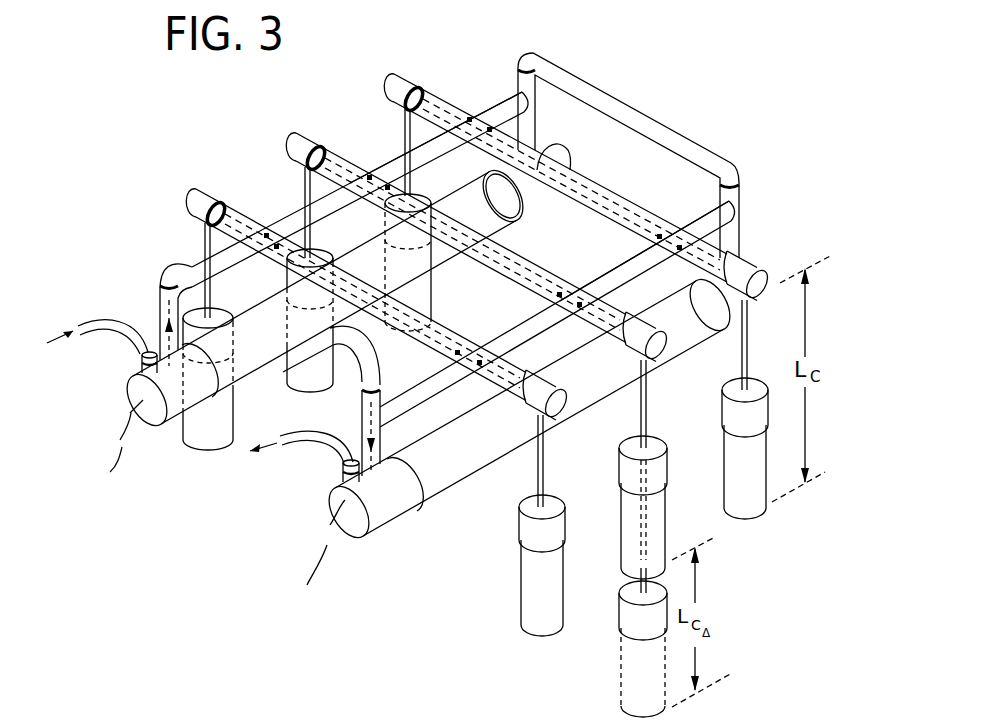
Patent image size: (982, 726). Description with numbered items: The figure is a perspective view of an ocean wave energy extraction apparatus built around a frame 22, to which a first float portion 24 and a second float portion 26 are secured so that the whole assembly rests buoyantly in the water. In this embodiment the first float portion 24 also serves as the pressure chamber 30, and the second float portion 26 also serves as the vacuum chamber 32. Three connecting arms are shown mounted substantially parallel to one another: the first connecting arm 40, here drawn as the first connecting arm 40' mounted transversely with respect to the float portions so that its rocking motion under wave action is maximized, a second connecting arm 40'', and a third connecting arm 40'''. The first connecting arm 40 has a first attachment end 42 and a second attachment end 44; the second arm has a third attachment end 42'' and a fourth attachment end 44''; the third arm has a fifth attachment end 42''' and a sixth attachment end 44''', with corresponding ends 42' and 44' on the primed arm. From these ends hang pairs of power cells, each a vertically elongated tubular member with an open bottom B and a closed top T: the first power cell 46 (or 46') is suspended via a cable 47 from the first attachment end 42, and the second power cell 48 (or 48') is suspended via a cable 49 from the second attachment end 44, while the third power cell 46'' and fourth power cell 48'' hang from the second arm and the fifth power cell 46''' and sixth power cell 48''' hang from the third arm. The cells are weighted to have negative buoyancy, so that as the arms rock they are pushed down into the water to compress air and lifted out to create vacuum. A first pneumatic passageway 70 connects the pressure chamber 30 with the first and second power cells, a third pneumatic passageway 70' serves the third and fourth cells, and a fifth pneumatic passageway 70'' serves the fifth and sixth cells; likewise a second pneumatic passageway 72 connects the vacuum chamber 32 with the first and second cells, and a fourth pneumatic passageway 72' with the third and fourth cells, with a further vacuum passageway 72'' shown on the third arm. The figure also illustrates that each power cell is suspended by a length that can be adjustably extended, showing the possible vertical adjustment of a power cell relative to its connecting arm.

The frame 22 is at (630, 103).
The first float portion 24 is at (330, 500).
The second float portion 26 is at (130, 392).
The pressure chamber 30 is at (320, 540).
The vacuum chamber 32 is at (128, 440).
The first connecting arm 40 is at (433, 228).
The first connecting arm 40' is at (333, 286).
The second connecting arm 40'' is at (435, 228).
The third connecting arm 40''' is at (535, 169).
The first attachment end 42 is at (315, 127).
The ring 42' is at (216, 214).
The third attachment end 42'' is at (292, 128).
The fifth attachment end 42''' is at (391, 69).
The second attachment end 44 is at (670, 331).
The coupler 44' is at (547, 395).
The fourth attachment end 44'' is at (665, 380).
The sixth attachment end 44''' is at (771, 302).
The first power cell 46 is at (345, 321).
The first power cell 46' is at (236, 379).
The third power cell 46'' is at (339, 321).
The fifth power cell 46''' is at (446, 262).
The cable 47 is at (200, 243).
The second power cell 48 is at (619, 547).
The second power cell 48' is at (517, 565).
The fourth power cell 48'' is at (613, 576).
The sixth power cell 48''' is at (714, 448).
The cable 49 is at (538, 480).
The first pneumatic passageway 70 is at (557, 314).
The third pneumatic passageway 70' is at (557, 314).
The fifth pneumatic passageway 70'' is at (644, 251).
The second pneumatic passageway 72 is at (360, 189).
The fourth pneumatic passageway 72' is at (360, 189).
The rail 72'' is at (436, 137).
The closed top T is at (528, 512).
The open bottom B is at (528, 632).